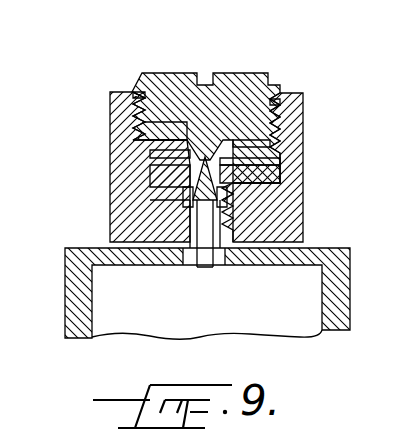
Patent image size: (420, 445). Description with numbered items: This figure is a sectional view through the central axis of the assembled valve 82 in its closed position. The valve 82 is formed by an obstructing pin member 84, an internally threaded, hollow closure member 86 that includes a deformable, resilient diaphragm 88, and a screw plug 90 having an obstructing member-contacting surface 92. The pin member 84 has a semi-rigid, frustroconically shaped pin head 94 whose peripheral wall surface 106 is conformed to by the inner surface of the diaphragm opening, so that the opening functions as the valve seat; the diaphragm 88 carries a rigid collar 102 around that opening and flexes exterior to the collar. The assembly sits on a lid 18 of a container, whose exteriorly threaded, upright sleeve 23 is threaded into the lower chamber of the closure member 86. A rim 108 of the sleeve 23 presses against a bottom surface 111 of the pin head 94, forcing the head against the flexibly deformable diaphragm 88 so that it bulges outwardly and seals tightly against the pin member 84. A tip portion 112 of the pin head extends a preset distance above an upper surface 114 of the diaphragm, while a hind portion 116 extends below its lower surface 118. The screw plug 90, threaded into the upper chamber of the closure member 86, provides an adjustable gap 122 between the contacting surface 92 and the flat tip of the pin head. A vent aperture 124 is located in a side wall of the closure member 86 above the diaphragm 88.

The lid 18 is at (63, 302).
The sleeve 23 is at (192, 266).
The valve 82 is at (292, 58).
The pin member 84 is at (209, 265).
The hollow closure member 86 is at (305, 92).
The diaphragm 88 is at (285, 142).
The screw plug 90 is at (142, 76).
The obstructing member-contacting surface 92 is at (207, 152).
The pin head 94 is at (188, 194).
The rigid collar 102 is at (160, 128).
The peripheral wall surface 106 is at (172, 173).
The rim 108 is at (250, 212).
The bottom surface 111 is at (188, 202).
The tip portion 112 is at (138, 96).
The upper surface 114 is at (170, 152).
The hind portion 116 is at (232, 188).
The lower surface 118 is at (262, 170).
The adjustable gap 122 is at (300, 116).
The vent aperture 124 is at (298, 158).